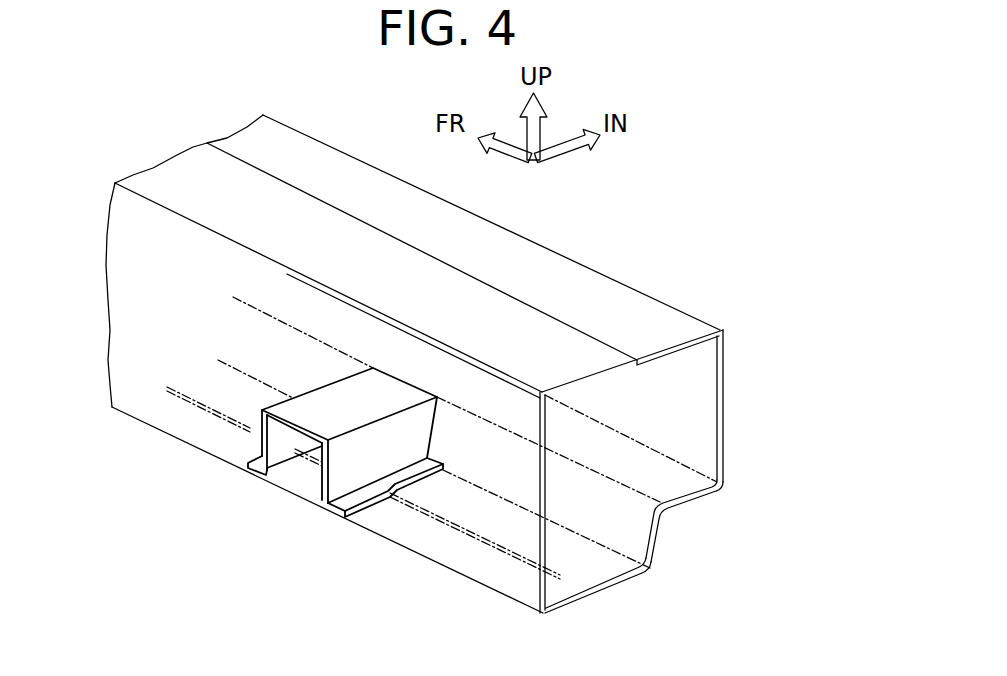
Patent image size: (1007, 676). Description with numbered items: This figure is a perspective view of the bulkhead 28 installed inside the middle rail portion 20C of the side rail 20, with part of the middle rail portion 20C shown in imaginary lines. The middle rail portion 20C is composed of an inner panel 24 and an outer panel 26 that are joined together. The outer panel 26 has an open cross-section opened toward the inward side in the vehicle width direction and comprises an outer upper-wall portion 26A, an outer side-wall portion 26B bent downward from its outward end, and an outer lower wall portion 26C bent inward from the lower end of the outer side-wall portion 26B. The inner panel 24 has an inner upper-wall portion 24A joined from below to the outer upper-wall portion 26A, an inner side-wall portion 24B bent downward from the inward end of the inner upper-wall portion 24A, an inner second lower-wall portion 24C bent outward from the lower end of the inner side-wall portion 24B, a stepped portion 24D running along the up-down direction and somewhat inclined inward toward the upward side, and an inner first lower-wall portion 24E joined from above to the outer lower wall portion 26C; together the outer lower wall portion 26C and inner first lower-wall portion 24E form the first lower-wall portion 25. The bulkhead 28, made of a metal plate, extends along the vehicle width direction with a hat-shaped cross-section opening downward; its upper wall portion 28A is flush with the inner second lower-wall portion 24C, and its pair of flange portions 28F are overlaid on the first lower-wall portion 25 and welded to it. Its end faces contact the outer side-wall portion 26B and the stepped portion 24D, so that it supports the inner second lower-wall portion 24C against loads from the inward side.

The side rail 20 is at (464, 384).
The middle rail portion 20C is at (464, 384).
The inner panel 24 is at (495, 347).
The inner upper-wall portion 24A is at (660, 323).
The inner side-wall portion 24B is at (725, 398).
The inner second lower-wall portion 24C is at (640, 460).
The stepped portion 24D is at (583, 503).
The inner first lower-wall portion 24E is at (497, 510).
The first lower-wall portion 25 is at (444, 496).
The outer panel 26 is at (414, 384).
The outer upper-wall portion 26A is at (425, 272).
The outer side-wall portion 26B is at (512, 415).
The outer lower wall portion 26C is at (565, 592).
The bulkhead 28 is at (351, 414).
The upper wall portion 28A is at (313, 402).
The flange portions 28F is at (253, 452).